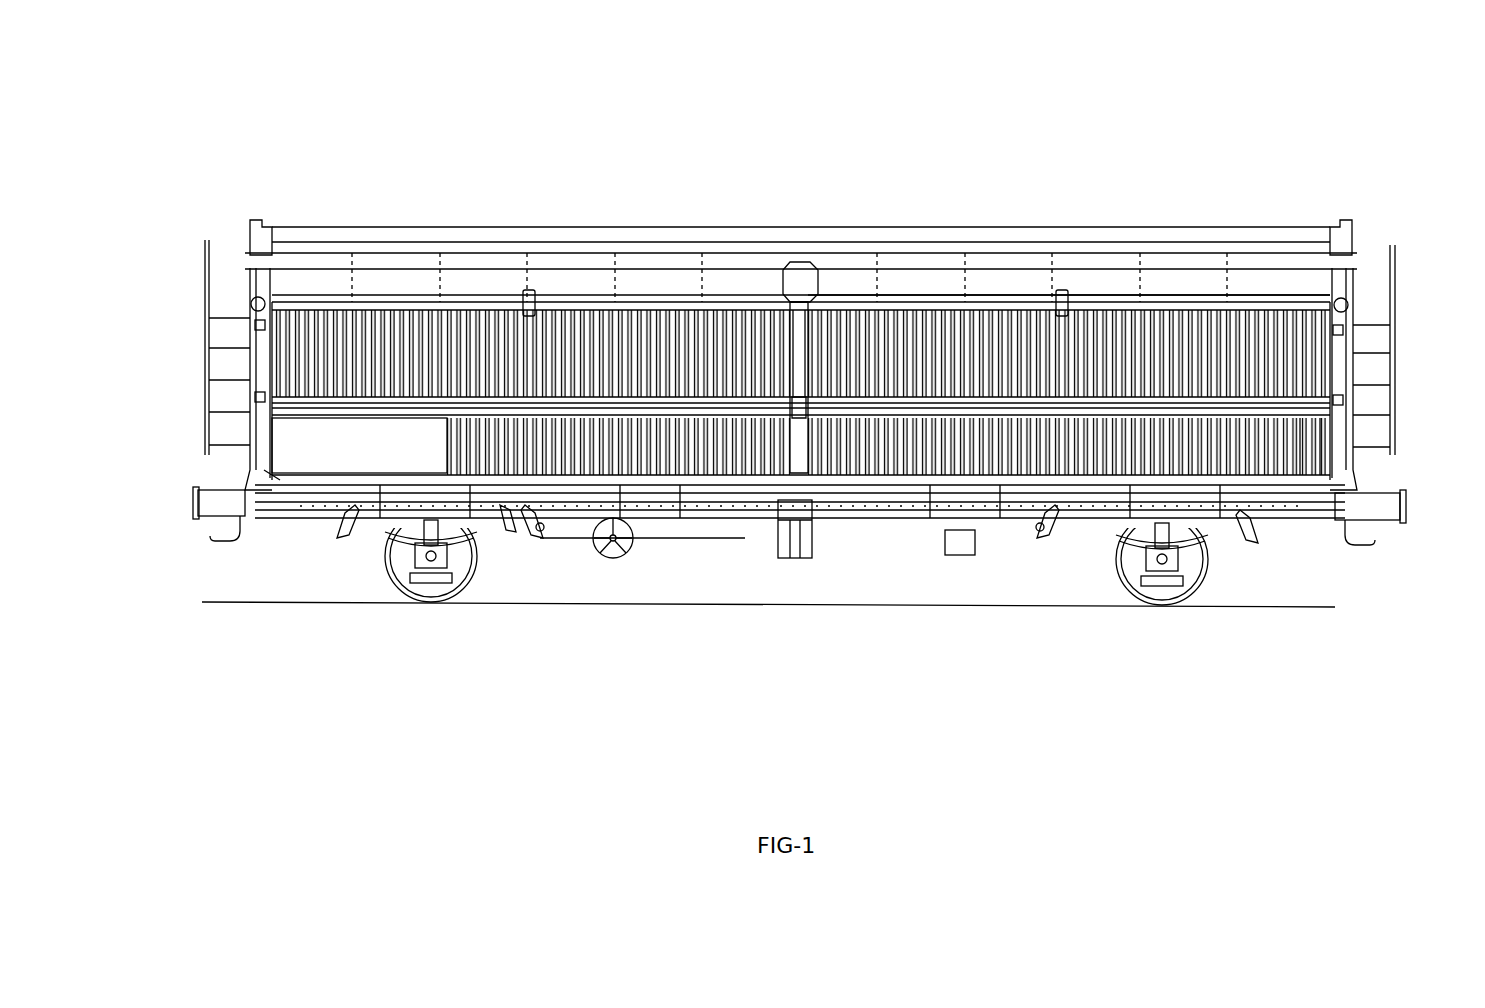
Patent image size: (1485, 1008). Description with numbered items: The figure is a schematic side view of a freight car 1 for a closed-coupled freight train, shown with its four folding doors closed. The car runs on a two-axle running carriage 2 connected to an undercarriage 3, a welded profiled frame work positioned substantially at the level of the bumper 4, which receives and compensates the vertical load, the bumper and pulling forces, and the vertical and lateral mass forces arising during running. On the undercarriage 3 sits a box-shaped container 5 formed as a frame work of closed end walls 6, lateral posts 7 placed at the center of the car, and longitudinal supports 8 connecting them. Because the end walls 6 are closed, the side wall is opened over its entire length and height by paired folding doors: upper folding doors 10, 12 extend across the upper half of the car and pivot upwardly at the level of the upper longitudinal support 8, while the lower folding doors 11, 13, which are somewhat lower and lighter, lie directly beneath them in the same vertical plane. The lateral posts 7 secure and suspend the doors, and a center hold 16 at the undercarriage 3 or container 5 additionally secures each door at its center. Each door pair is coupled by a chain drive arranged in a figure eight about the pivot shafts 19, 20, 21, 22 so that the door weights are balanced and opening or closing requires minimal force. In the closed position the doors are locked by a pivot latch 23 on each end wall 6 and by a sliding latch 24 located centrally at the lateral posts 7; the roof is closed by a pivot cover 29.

The freight car 1 is at (1384, 206).
The two-axle running carriage 2 is at (420, 585).
The undercarriage 3 is at (1280, 515).
The bumper 4 is at (1395, 520).
The box-shaped container 5 is at (330, 295).
The end wall 6 is at (262, 340).
The lateral post 7 is at (800, 300).
The longitudinal support 8 is at (590, 295).
The upper folding door 10 is at (465, 320).
The lower folding door 11 is at (497, 505).
The upper folding door 12 is at (1170, 315).
The lower folding door 13 is at (1005, 475).
The center hold 16 is at (528, 312).
The pivot shaft 19 is at (640, 305).
The pivot shaft 20 is at (705, 500).
The pivot shaft 21 is at (905, 300).
The pivot shaft 22 is at (880, 505).
The pivot latch 23 is at (265, 405).
The sliding latch 24 is at (815, 500).
The pivot cover 29 is at (268, 428).